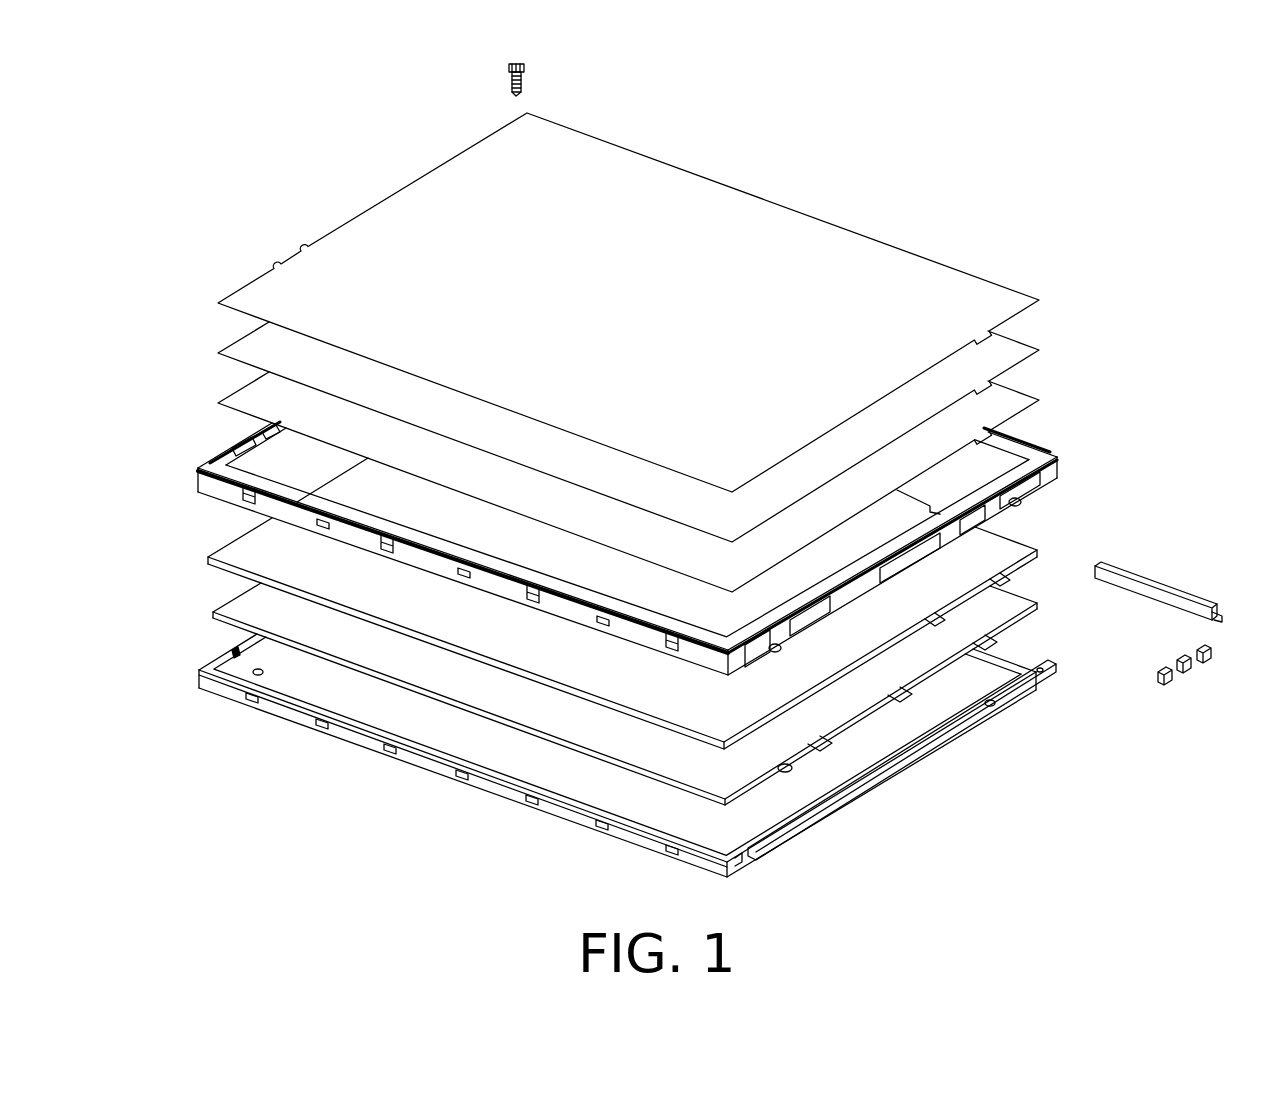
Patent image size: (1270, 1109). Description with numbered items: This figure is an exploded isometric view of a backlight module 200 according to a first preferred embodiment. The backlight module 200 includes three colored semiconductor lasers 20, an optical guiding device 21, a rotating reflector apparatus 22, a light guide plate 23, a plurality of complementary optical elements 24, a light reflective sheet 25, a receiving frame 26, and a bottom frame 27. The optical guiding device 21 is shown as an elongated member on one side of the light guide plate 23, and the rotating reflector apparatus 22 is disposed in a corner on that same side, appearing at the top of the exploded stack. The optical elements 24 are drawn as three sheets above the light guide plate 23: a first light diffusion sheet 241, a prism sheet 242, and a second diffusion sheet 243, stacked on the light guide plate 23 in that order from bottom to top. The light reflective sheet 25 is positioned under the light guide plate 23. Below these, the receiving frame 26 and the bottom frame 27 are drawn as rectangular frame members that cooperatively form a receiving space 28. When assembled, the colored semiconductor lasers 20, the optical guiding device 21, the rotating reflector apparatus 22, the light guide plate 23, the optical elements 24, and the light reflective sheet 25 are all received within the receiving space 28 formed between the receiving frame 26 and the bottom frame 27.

The backlight module 200 is at (310, 197).
The rotating reflector apparatus 22 is at (524, 86).
The complementary optical elements 24 is at (202, 297).
The second diffusion sheet 243 is at (807, 243).
The prism sheet 242 is at (1000, 348).
The first light diffusion sheet 241 is at (1007, 407).
The receiving frame 26 is at (1020, 450).
The light guide plate 23 is at (990, 552).
The light reflective sheet 25 is at (1005, 610).
The optical guiding device 21 is at (1152, 590).
The colored semiconductor lasers 20 is at (1205, 663).
The bottom frame 27 is at (1012, 685).
The receiving space 28 is at (320, 685).